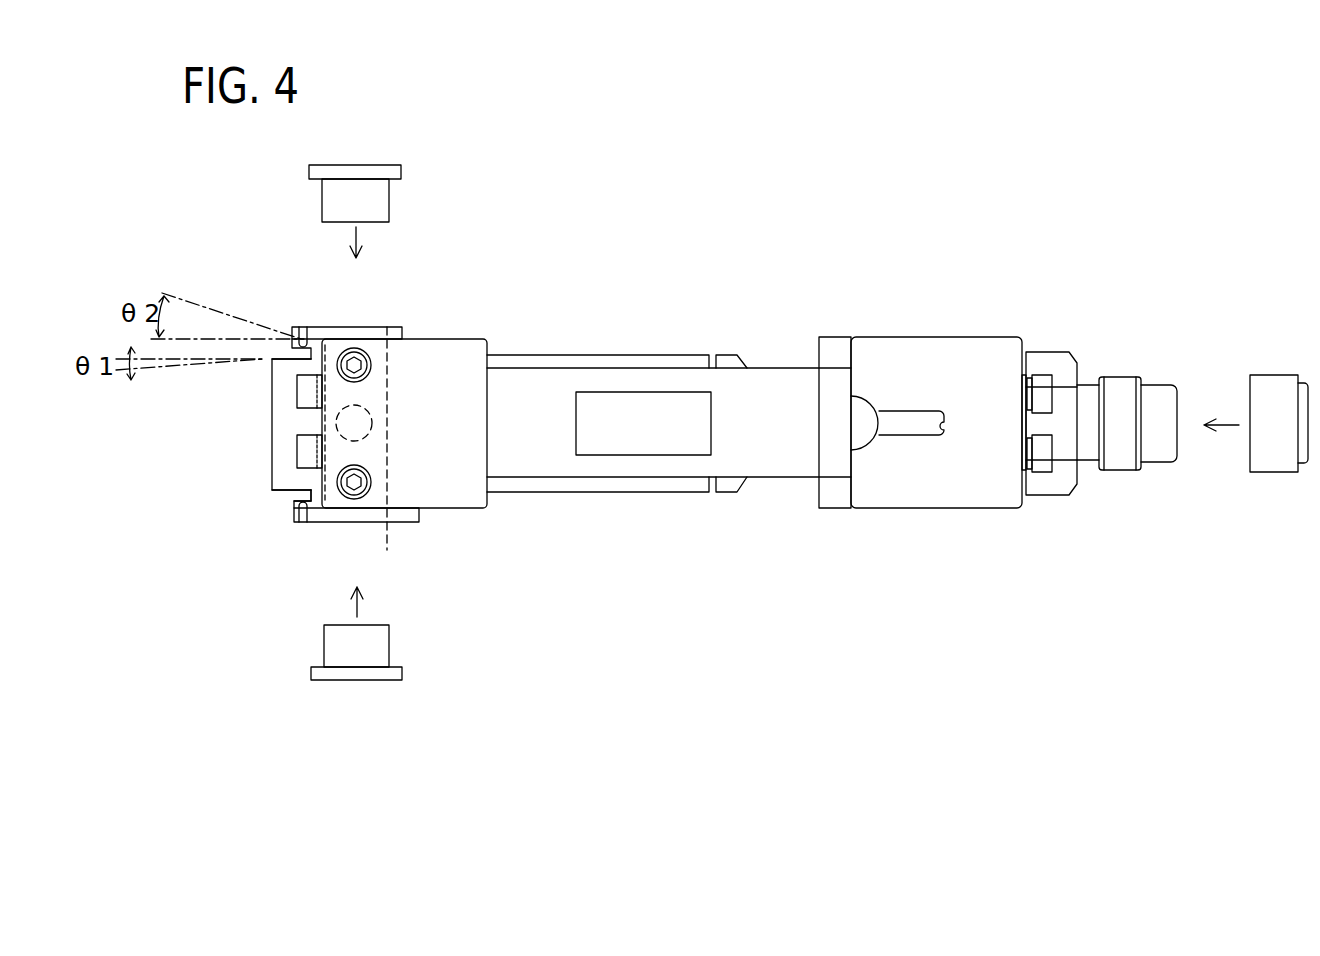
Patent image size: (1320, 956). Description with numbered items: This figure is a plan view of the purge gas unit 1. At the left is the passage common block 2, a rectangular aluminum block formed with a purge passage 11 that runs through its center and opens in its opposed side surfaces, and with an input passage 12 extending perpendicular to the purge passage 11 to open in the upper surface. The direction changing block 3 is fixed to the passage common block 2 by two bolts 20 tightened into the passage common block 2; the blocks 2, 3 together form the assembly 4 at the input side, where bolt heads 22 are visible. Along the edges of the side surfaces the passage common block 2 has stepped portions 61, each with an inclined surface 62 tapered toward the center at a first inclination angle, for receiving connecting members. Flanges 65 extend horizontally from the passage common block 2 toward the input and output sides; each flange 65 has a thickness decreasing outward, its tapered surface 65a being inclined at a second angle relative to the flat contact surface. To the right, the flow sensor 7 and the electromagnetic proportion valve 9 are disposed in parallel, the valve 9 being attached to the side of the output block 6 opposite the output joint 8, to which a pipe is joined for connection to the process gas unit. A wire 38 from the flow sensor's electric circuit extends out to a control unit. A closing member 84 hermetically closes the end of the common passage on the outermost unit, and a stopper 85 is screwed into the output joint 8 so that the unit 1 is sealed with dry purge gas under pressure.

The purge gas unit 1 is at (957, 204).
The passage common block 2 is at (282, 430).
The direction changing block 3 is at (337, 398).
The clamp 4 is at (220, 400).
The output block 6 is at (935, 353).
The flow sensor 7 is at (556, 382).
The output joint 8 is at (1123, 388).
The electromagnetic proportion valve 9 is at (648, 360).
The purge passage 11 is at (404, 448).
The input passage 12 is at (372, 430).
The bolts 20 is at (353, 358).
The bolt 22 is at (300, 385).
The wire 38 is at (920, 433).
The stepped portions 61 is at (308, 500).
The inclined surface 62 is at (308, 493).
The flanges 65 is at (300, 326).
The tapered surfaces 65a is at (305, 338).
The closing member 84 is at (383, 198).
The stoppers 85 is at (1261, 438).